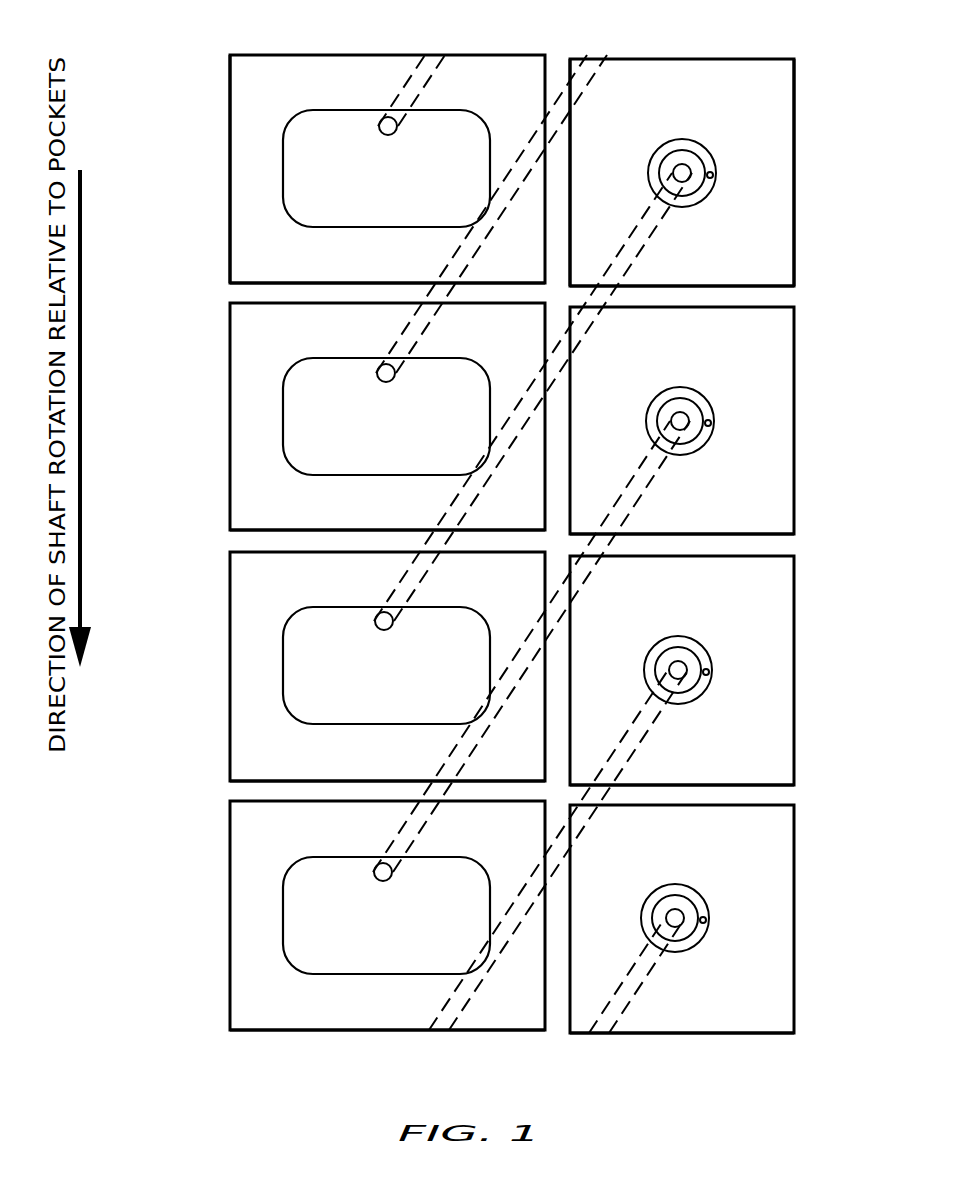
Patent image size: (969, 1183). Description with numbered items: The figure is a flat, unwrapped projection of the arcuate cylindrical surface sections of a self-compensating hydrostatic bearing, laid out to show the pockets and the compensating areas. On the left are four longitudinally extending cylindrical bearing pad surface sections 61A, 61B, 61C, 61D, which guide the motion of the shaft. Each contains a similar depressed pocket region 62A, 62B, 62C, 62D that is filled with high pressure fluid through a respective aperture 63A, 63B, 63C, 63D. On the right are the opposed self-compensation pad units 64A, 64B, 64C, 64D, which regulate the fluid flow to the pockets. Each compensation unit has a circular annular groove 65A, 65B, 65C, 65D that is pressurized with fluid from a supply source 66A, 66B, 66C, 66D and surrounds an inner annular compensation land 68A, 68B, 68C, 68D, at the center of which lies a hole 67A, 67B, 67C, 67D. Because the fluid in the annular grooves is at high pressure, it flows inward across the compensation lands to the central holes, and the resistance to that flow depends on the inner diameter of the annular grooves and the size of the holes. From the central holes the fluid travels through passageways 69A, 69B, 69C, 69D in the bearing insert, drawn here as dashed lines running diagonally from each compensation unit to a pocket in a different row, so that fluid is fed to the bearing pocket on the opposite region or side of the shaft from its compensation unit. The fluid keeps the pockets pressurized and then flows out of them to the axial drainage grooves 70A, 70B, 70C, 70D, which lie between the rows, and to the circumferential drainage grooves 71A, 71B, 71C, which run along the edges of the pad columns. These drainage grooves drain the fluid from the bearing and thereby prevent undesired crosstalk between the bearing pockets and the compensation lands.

The cylindrical bearing pad surface section 61A is at (180, 133).
The cylindrical bearing pad surface section 61B is at (190, 352).
The cylindrical bearing pad surface section 61C is at (185, 621).
The cylindrical bearing pad surface section 61D is at (190, 874).
The depressed pocket region 62A is at (325, 135).
The depressed pocket region 62B is at (323, 382).
The depressed pocket region 62C is at (321, 627).
The depressed pocket region 62D is at (320, 876).
The aperture 63A is at (388, 135).
The aperture 63B is at (386, 382).
The aperture 63C is at (384, 630).
The aperture 63D is at (383, 881).
The self-compensation pad unit 64A is at (850, 110).
The self-compensation pad unit 64B is at (845, 374).
The self-compensation pad unit 64C is at (843, 626).
The self-compensation pad unit 64D is at (838, 873).
The circular annular groove 65A is at (658, 147).
The circular annular groove 65B is at (656, 396).
The circular annular groove 65C is at (654, 645).
The circular annular groove 65D is at (648, 905).
The supply source 66A is at (713, 175).
The supply source 66B is at (711, 423).
The supply source 66C is at (709, 672).
The supply source 66D is at (706, 919).
The central hole 67A is at (683, 166).
The central hole 67B is at (681, 414).
The central hole 67C is at (679, 662).
The central hole 67D is at (675, 910).
The annular compensation land 68A is at (697, 160).
The annular compensation land 68B is at (695, 408).
The annular compensation land 68C is at (693, 657).
The annular compensation land 68D is at (690, 908).
The passageway 69A is at (650, 237).
The passageway 69B is at (648, 470).
The passageway 69C is at (648, 722).
The passageway 69D is at (645, 975).
The axial drainage groove 70A is at (772, 298).
The axial drainage groove 70B is at (772, 546).
The axial drainage groove 70C is at (768, 796).
The axial drainage groove 70D is at (770, 1047).
The circumferential drainage groove 71A is at (215, 67).
The circumferential drainage groove 71B is at (557, 70).
The circumferential drainage groove 71C is at (808, 68).